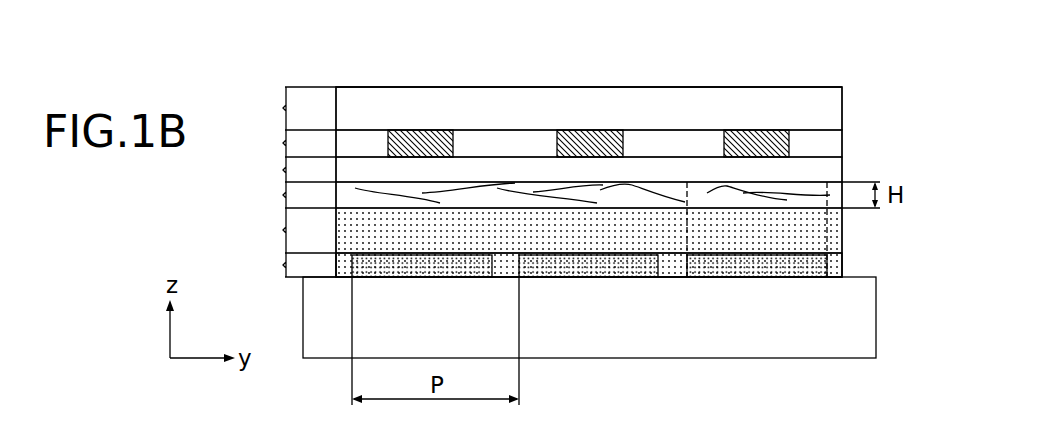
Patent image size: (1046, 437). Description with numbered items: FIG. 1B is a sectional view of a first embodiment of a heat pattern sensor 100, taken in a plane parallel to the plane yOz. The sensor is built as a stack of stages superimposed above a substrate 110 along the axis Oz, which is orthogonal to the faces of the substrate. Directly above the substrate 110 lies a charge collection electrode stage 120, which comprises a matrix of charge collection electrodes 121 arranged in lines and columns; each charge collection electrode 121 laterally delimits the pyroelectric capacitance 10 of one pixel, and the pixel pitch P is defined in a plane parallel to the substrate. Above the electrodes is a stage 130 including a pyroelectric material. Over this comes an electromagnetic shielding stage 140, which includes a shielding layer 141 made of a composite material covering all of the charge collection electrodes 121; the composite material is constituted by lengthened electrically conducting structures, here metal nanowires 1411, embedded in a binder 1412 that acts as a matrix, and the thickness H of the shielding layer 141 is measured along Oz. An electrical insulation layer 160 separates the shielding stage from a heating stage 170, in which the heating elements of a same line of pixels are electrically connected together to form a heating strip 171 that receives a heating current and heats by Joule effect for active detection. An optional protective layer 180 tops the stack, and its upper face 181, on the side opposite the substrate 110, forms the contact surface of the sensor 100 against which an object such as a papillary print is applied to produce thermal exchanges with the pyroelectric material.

The heat pattern sensor 100 is at (858, 88).
The substrate 110 is at (862, 317).
The charge collection electrode stage 120 is at (538, 263).
The charge collection electrode 121 is at (813, 267).
The stage including a pyroelectric material 130 is at (538, 242).
The electromagnetic shielding stage 140 is at (532, 195).
The shielding layer 141 is at (509, 195).
The metal nanowires 1411 is at (547, 192).
The binder 1412 is at (457, 188).
The pyroelectric capacitance 10 is at (715, 172).
The electrical insulation layer 160 is at (538, 168).
The heating stage 170 is at (538, 143).
The heating strip 171 is at (789, 145).
The protective layer 180 is at (538, 108).
The upper face 181 is at (372, 88).